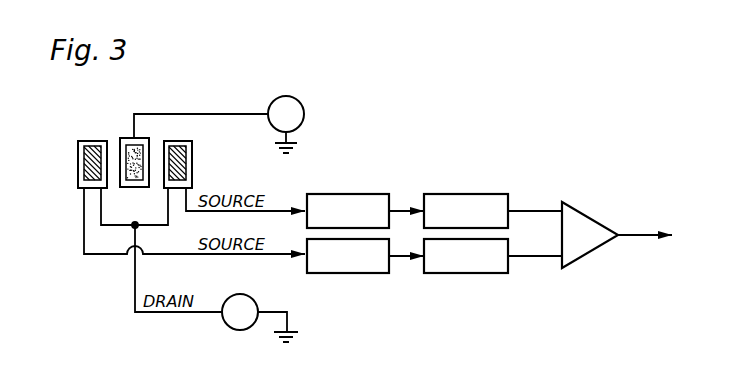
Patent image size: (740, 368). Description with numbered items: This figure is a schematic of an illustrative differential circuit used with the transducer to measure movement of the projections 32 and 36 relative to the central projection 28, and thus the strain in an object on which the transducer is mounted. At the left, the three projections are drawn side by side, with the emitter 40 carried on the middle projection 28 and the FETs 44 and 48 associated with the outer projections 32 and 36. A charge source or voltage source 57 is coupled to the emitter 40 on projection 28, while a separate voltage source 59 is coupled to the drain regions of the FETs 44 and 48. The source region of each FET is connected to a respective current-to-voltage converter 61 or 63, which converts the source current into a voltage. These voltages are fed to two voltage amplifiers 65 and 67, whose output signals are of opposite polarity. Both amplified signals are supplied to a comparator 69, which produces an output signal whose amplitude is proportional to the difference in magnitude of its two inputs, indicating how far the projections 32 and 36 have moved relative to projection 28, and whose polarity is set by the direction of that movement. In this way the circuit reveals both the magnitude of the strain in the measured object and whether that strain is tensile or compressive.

The projection 28 is at (120, 141).
The emitter 40 is at (139, 152).
The projection 32 is at (78, 163).
The FET 44 is at (88, 168).
The FET 48 is at (192, 152).
The projection 36 is at (192, 173).
The charge source or voltage source 57 is at (305, 111).
The voltage source 59 is at (226, 324).
The current-to-voltage converter 61 is at (338, 194).
The current-to-voltage converter 63 is at (338, 273).
The voltage amplifier 65 is at (452, 194).
The voltage amplifier 67 is at (465, 273).
The comparator 69 is at (587, 218).